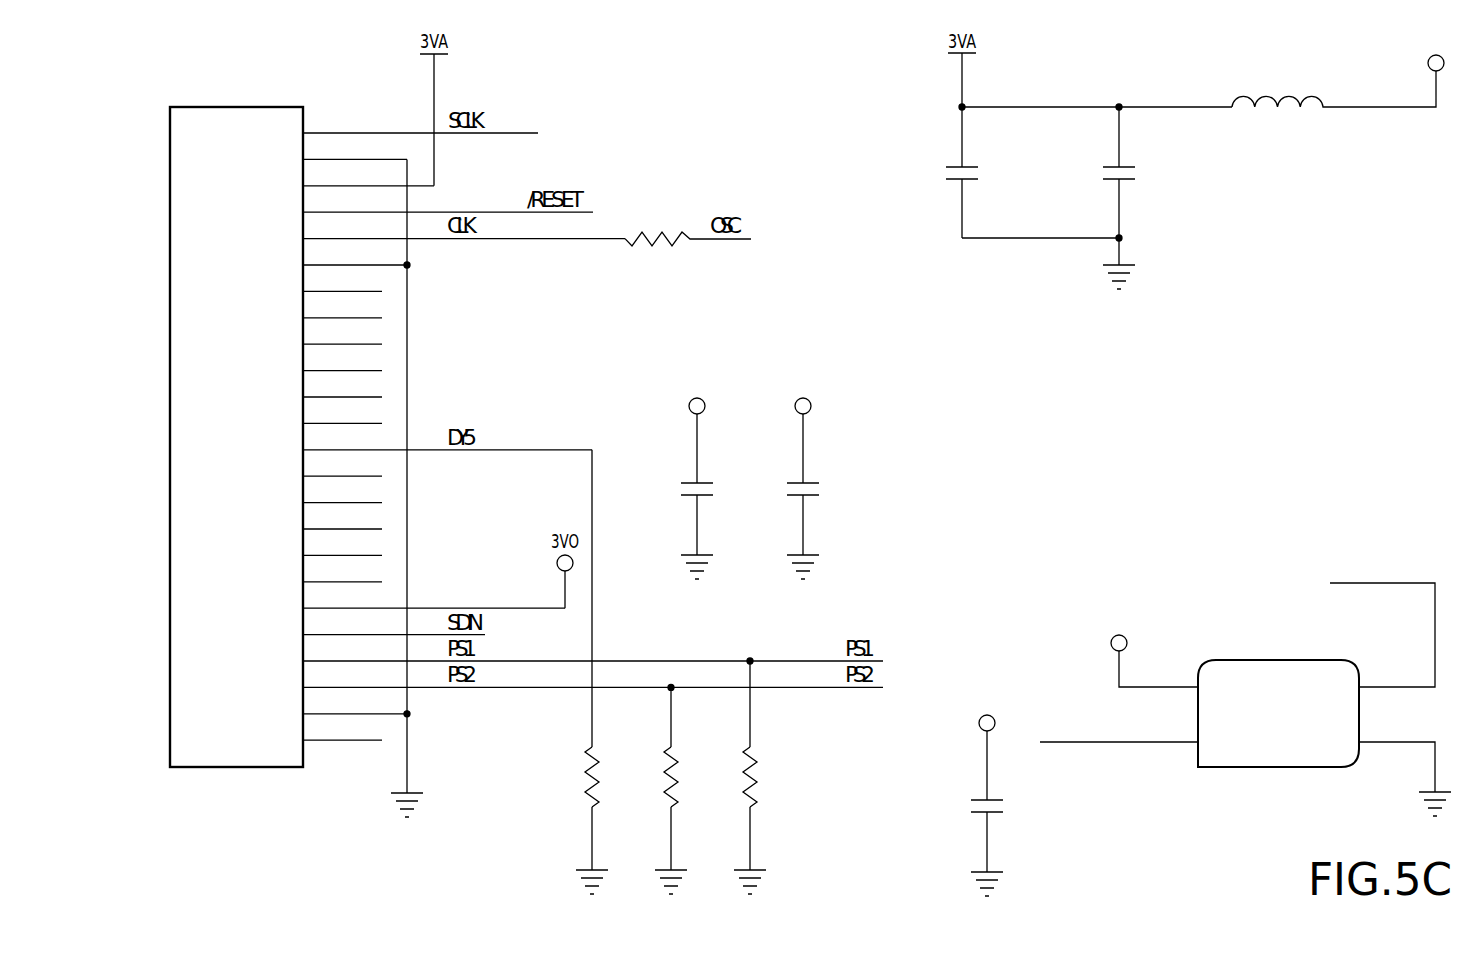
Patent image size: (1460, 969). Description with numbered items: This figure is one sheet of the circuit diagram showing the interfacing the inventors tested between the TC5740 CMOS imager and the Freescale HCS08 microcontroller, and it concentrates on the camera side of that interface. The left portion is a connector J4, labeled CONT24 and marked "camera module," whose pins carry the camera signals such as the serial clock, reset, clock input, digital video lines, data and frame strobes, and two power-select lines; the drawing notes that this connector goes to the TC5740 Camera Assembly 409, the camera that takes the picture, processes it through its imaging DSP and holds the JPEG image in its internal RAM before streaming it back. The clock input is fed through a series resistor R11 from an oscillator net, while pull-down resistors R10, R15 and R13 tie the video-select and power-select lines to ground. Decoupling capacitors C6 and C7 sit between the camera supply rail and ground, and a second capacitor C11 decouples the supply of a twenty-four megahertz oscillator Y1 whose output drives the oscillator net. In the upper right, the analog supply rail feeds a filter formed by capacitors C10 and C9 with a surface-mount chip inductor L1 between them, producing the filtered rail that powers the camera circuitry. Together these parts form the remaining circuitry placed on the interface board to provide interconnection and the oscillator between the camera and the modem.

The TC5740 Camera Assembly 409 is at (482, 465).
The camera module connector CONT24 J4 is at (526, 411).
The resistor 47K5 R10 is at (611, 672).
The resistor 22R0 R11 is at (688, 203).
The resistor 47K5 R13 is at (769, 776).
The resistor 47K5 R15 is at (690, 789).
The capacitor 2.2uF C6 is at (724, 476).
The capacitor 100nF C7 is at (832, 476).
The capacitor 1uF C9 is at (1140, 175).
The capacitor 2.2uF C10 is at (988, 175).
The capacitor 100nF C11 is at (959, 792).
The SMT chip inductor 3.3uH L1 is at (1340, 126).
The 24MHz oscillator Y1 is at (1245, 687).